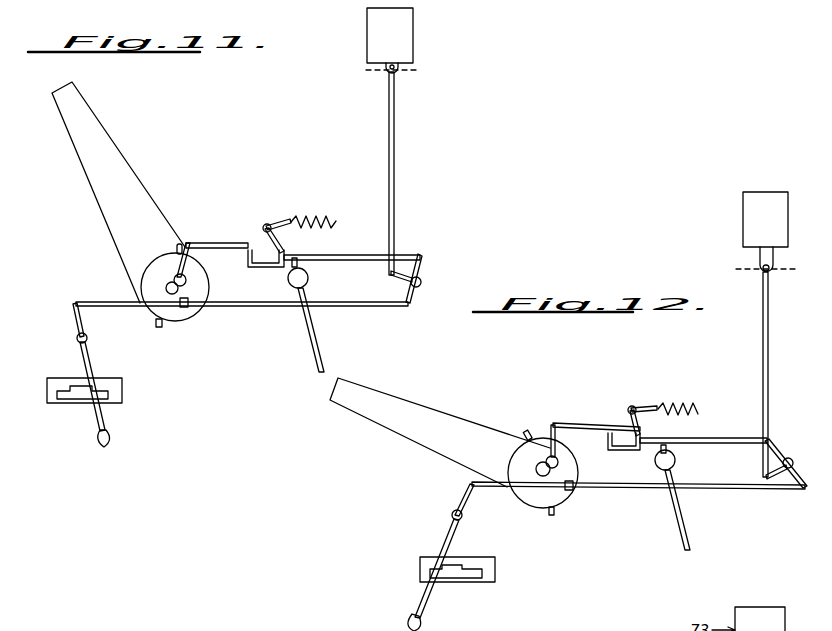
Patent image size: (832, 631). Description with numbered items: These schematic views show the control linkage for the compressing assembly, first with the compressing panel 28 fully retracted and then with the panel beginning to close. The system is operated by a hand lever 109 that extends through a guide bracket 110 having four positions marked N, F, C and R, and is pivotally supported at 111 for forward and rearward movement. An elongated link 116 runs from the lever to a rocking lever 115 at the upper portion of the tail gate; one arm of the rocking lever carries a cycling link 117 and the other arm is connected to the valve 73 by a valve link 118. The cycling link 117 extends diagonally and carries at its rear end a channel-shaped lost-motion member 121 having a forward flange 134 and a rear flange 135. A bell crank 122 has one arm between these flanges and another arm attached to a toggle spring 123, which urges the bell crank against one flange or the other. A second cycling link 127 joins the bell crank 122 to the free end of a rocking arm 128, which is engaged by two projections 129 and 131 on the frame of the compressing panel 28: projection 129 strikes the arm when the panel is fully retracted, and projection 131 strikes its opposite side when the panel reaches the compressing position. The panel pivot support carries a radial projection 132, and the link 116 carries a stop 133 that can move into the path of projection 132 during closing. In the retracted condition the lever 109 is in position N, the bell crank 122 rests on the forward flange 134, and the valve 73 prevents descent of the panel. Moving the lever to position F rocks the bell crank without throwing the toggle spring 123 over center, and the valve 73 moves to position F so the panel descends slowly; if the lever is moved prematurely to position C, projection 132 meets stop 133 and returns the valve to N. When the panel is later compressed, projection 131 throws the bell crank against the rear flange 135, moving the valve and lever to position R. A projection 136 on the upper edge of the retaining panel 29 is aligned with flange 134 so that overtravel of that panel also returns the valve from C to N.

In FIG. 11, the compressing panel 28 is at (139, 165).
In FIG. 12, the compressing panel 28 is at (423, 397).
In FIG. 11, the retaining panel 29 is at (327, 342).
In FIG. 12, the retaining panel 29 is at (695, 524).
In FIG. 11, the valve 73 is at (423, 59).
In FIG. 12, the valve 73 is at (738, 217).
In FIG. 11, the hand lever 109 is at (92, 357).
In FIG. 12, the hand lever 109 is at (458, 542).
In FIG. 11, the guide bracket 110 is at (77, 405).
In FIG. 12, the guide bracket 110 is at (458, 580).
In FIG. 11, the pivotal support 111 is at (88, 338).
In FIG. 12, the pivotal support 111 is at (463, 516).
In FIG. 11, the rocking lever 115 is at (420, 285).
In FIG. 12, the rocking lever 115 is at (792, 462).
In FIG. 11, the elongated link 116 is at (276, 308).
In FIG. 12, the elongated link 116 is at (640, 492).
In FIG. 11, the cycling link 117 is at (357, 255).
In FIG. 12, the cycling link 117 is at (748, 432).
In FIG. 11, the valve link 118 is at (395, 144).
In FIG. 12, the valve link 118 is at (768, 343).
In FIG. 11, the lost-motion member 121 is at (272, 270).
In FIG. 12, the lost-motion member 121 is at (629, 452).
In FIG. 11, the bell crank 122 is at (268, 226).
In FIG. 12, the bell crank 122 is at (636, 406).
In FIG. 11, the toggle spring 123 is at (322, 221).
In FIG. 12, the toggle spring 123 is at (695, 408).
In FIG. 11, the cycling link 127 is at (221, 242).
In FIG. 12, the cycling link 127 is at (580, 424).
In FIG. 11, the rocking arm 128 is at (190, 272).
In FIG. 12, the rocking arm 128 is at (573, 455).
In FIG. 11, the projection 129 is at (180, 242).
In FIG. 12, the projection 129 is at (522, 437).
In FIG. 11, the projection 131 is at (163, 327).
In FIG. 12, the projection 131 is at (553, 515).
In FIG. 11, the radial projection 132 is at (165, 292).
In FIG. 12, the radial projection 132 is at (540, 477).
In FIG. 11, the stop 133 is at (196, 304).
In FIG. 12, the stop 133 is at (573, 489).
In FIG. 11, the forward flange 134 is at (285, 255).
In FIG. 12, the forward flange 134 is at (645, 440).
In FIG. 11, the rear flange 135 is at (248, 254).
In FIG. 12, the rear flange 135 is at (608, 441).
In FIG. 11, the projection 136 is at (302, 265).
In FIG. 12, the projection 136 is at (670, 448).
In FIG. 11, the neutral position N is at (400, 71).
In FIG. 12, the neutral position N is at (468, 562).
In FIG. 11, the forward position F is at (58, 398).
In FIG. 12, the forward position F is at (757, 272).
In FIG. 11, the retract position R is at (82, 380).
In FIG. 12, the retract position R is at (452, 560).
In FIG. 11, the compressing position C is at (122, 400).
In FIG. 12, the compressing position C is at (492, 578).